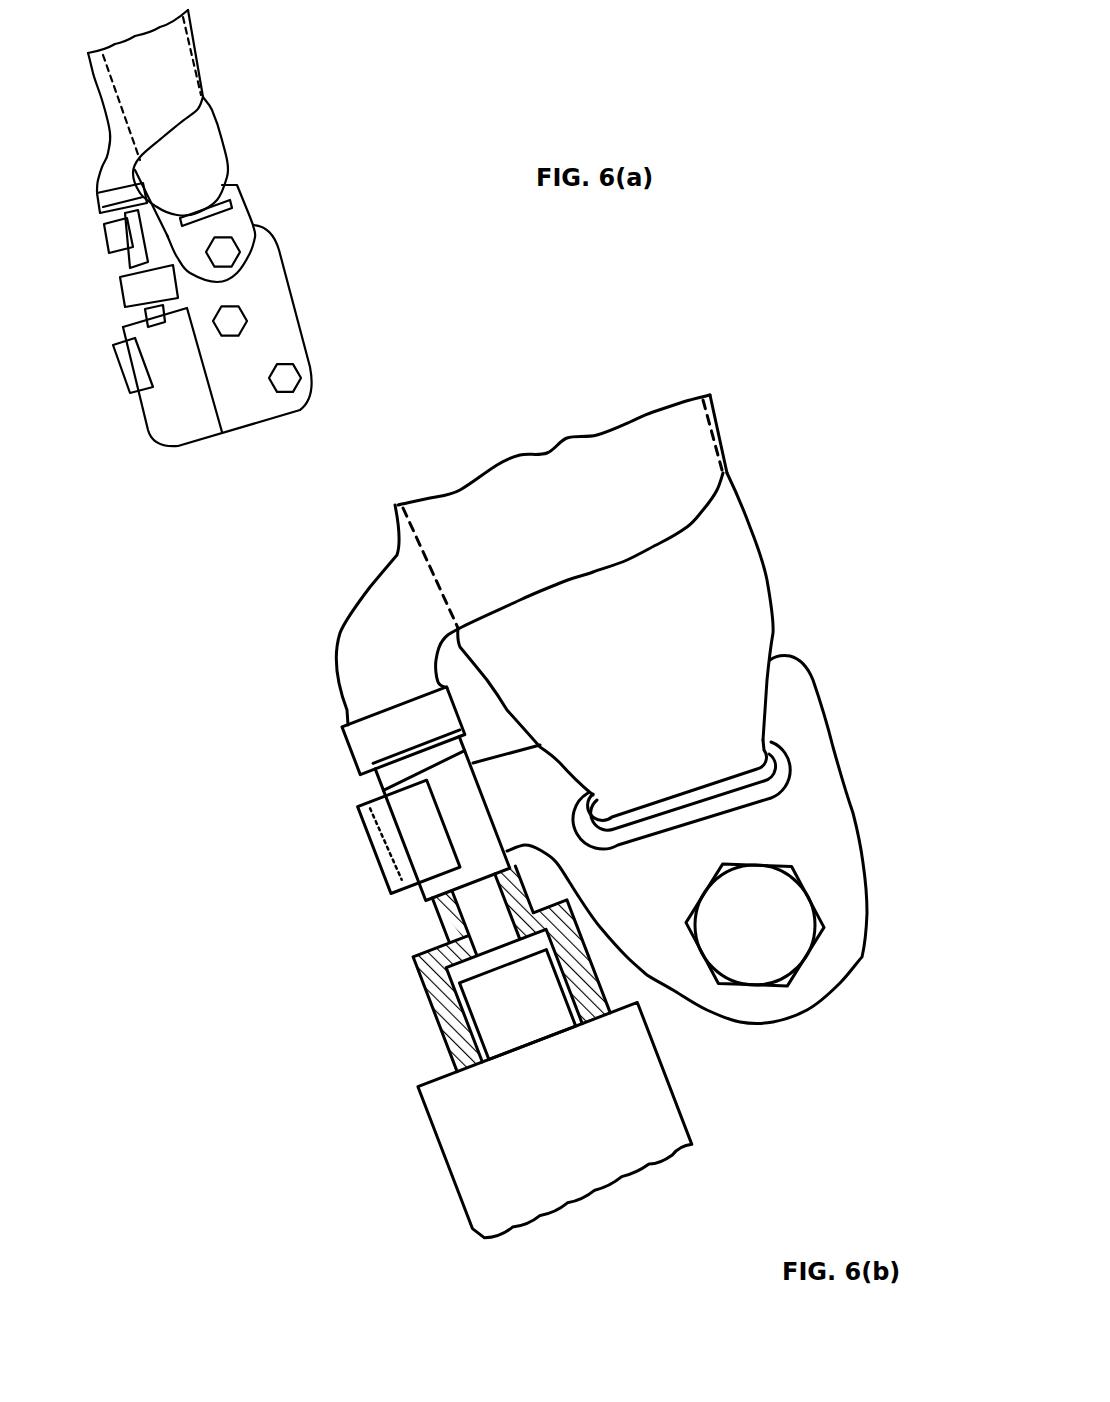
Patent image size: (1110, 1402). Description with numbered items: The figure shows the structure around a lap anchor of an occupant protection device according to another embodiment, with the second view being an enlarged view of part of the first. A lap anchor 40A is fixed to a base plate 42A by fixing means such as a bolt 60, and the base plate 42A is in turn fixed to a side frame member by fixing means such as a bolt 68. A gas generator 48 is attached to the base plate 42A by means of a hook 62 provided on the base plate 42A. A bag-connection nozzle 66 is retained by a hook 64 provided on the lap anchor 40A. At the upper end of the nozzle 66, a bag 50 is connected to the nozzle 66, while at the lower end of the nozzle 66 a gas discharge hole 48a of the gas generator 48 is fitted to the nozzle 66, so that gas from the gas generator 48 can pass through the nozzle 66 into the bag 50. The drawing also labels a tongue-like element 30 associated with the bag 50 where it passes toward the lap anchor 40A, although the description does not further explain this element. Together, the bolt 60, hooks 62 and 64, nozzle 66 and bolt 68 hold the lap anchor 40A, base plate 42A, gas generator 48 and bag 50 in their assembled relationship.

In FIG. 6A, the bag 50 is at (207, 43).
In FIG. 6B, the bag 50 is at (723, 423).
In FIG. 6A, the tongue plate 30 is at (207, 147).
In FIG. 6B, the tongue plate 30 is at (738, 537).
In FIG. 6A, the lap anchor 40A is at (248, 203).
In FIG. 6B, the lap anchor 40A is at (808, 708).
In FIG. 6A, the base plate 42A is at (287, 328).
In FIG. 6A, the gas generator 48 is at (190, 423).
In FIG. 6B, the gas generator 48 is at (665, 1110).
In FIG. 6B, the gas discharge hole 48a is at (520, 1027).
In FIG. 6A, the bolt 60 is at (227, 253).
In FIG. 6B, the bolt 60 is at (762, 962).
In FIG. 6A, the hook 62 is at (127, 358).
In FIG. 6A, the hook 64 is at (110, 237).
In FIG. 6B, the hook 64 is at (373, 857).
In FIG. 6A, the bag-connection nozzle 66 is at (122, 260).
In FIG. 6B, the bag-connection nozzle 66 is at (483, 827).
In FIG. 6A, the bolt 68 is at (232, 316).